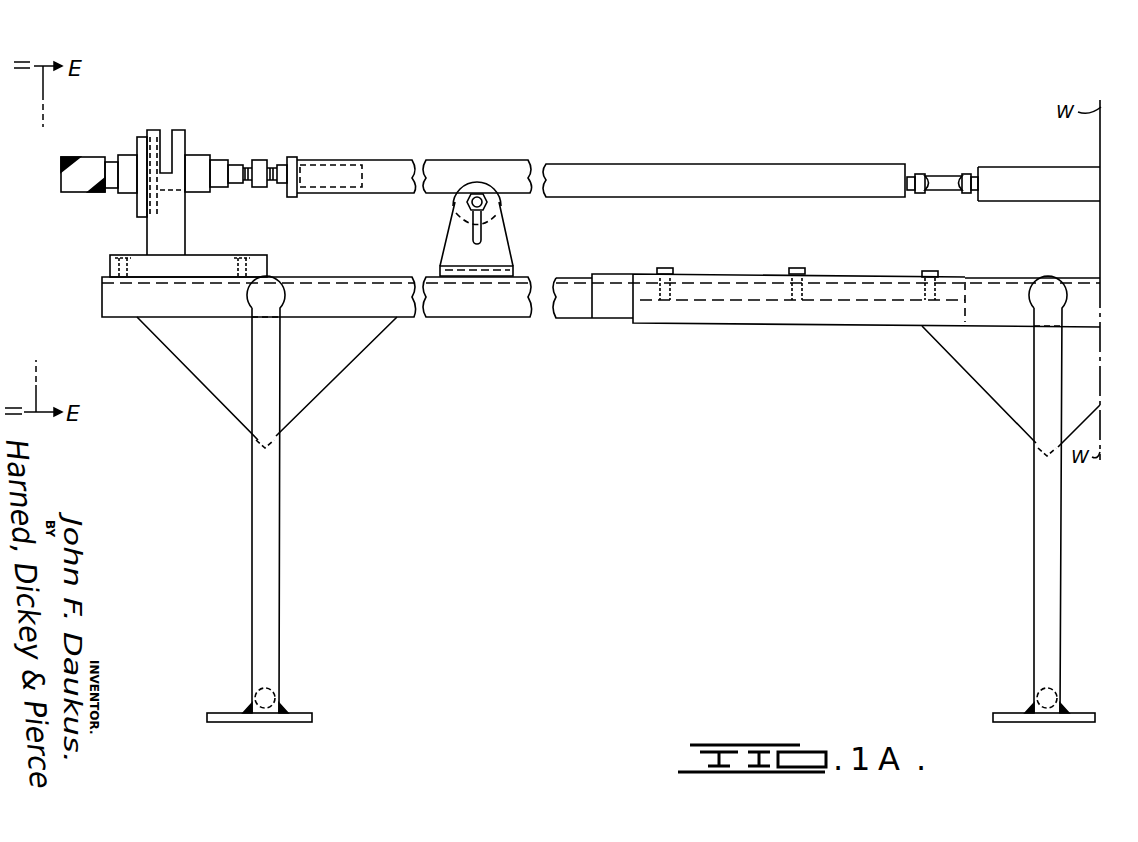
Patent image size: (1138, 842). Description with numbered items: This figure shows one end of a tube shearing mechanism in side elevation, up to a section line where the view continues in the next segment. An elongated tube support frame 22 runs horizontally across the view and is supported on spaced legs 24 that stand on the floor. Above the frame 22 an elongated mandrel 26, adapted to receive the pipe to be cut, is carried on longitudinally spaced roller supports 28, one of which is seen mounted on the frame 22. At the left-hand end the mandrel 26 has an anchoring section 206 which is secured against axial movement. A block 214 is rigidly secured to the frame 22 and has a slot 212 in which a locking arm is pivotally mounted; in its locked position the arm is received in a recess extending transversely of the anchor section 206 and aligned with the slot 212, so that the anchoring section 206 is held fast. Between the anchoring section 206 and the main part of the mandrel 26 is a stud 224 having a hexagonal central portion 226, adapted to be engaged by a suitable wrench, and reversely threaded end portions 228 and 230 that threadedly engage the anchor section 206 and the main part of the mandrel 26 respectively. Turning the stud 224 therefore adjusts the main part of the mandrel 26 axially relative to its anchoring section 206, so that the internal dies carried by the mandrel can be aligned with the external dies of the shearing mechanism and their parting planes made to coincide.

The tube support frame 22 is at (748, 323).
The legs 24 is at (268, 525).
The mandrel 26 is at (746, 163).
The roller supports 28 is at (455, 198).
The anchoring section 206 is at (200, 157).
The slot 212 is at (163, 140).
The block 214 is at (173, 237).
The stud 224 is at (263, 160).
The hexagonal central portion 226 is at (263, 183).
The threaded end portion 228 is at (247, 186).
The threaded end portion 230 is at (268, 182).